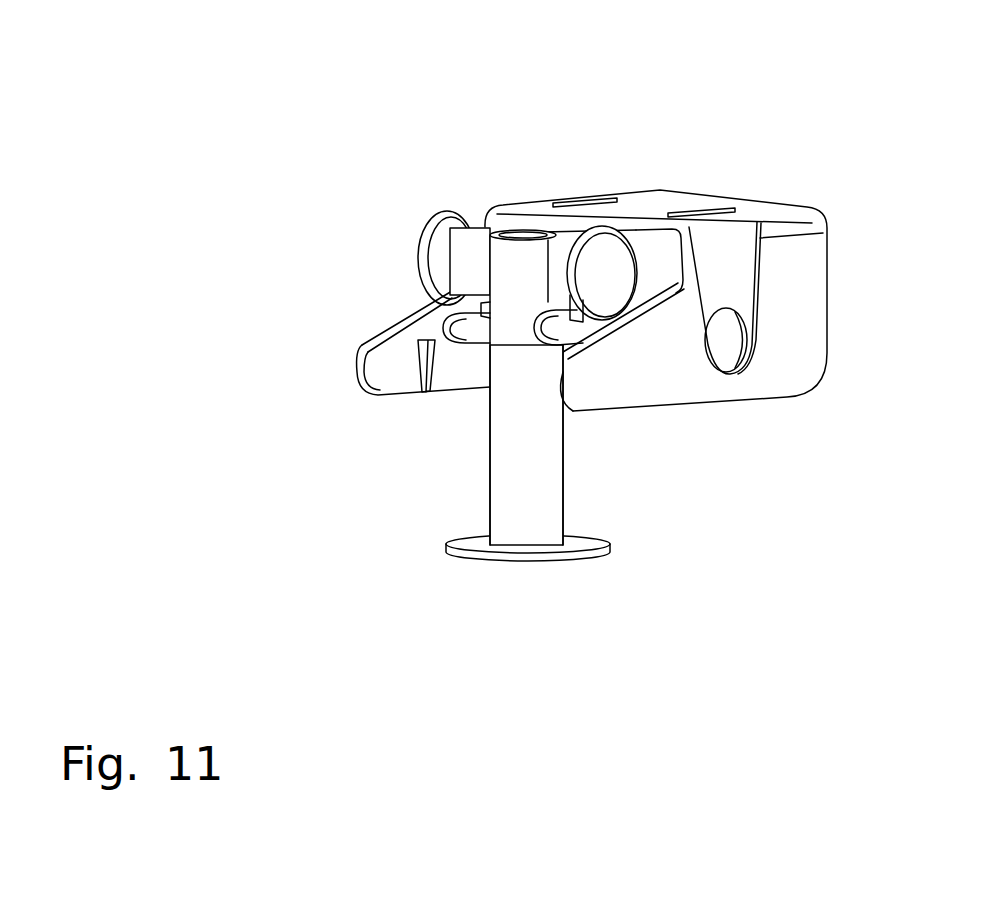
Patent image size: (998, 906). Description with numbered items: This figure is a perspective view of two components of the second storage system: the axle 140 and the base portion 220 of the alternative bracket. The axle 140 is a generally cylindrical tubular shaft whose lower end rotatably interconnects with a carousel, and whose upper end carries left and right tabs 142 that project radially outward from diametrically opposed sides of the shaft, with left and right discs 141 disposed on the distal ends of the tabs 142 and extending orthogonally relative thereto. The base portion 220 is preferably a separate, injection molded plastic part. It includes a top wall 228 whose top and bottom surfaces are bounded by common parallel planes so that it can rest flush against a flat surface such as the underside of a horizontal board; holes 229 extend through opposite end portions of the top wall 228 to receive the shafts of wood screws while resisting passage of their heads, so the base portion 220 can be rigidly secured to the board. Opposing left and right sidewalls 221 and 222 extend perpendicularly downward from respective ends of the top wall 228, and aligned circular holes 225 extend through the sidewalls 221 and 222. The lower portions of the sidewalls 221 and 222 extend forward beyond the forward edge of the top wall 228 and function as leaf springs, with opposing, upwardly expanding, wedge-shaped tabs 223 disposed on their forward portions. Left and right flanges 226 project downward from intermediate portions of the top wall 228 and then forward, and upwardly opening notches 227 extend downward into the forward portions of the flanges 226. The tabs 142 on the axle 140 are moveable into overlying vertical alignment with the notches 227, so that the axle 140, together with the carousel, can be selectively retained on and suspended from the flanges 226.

The axle 140 is at (591, 476).
The discs 141 is at (437, 215).
The tabs 142 is at (468, 245).
The base portion 220 is at (566, 226).
The left sidewall 221 is at (378, 368).
The right sidewall 222 is at (805, 373).
The wedge-shaped tabs 223 is at (417, 340).
The circular holes 225 is at (725, 336).
The flanges 226 is at (558, 340).
The notches 227 is at (580, 320).
The top wall 228 is at (658, 202).
The holes 229 is at (715, 212).